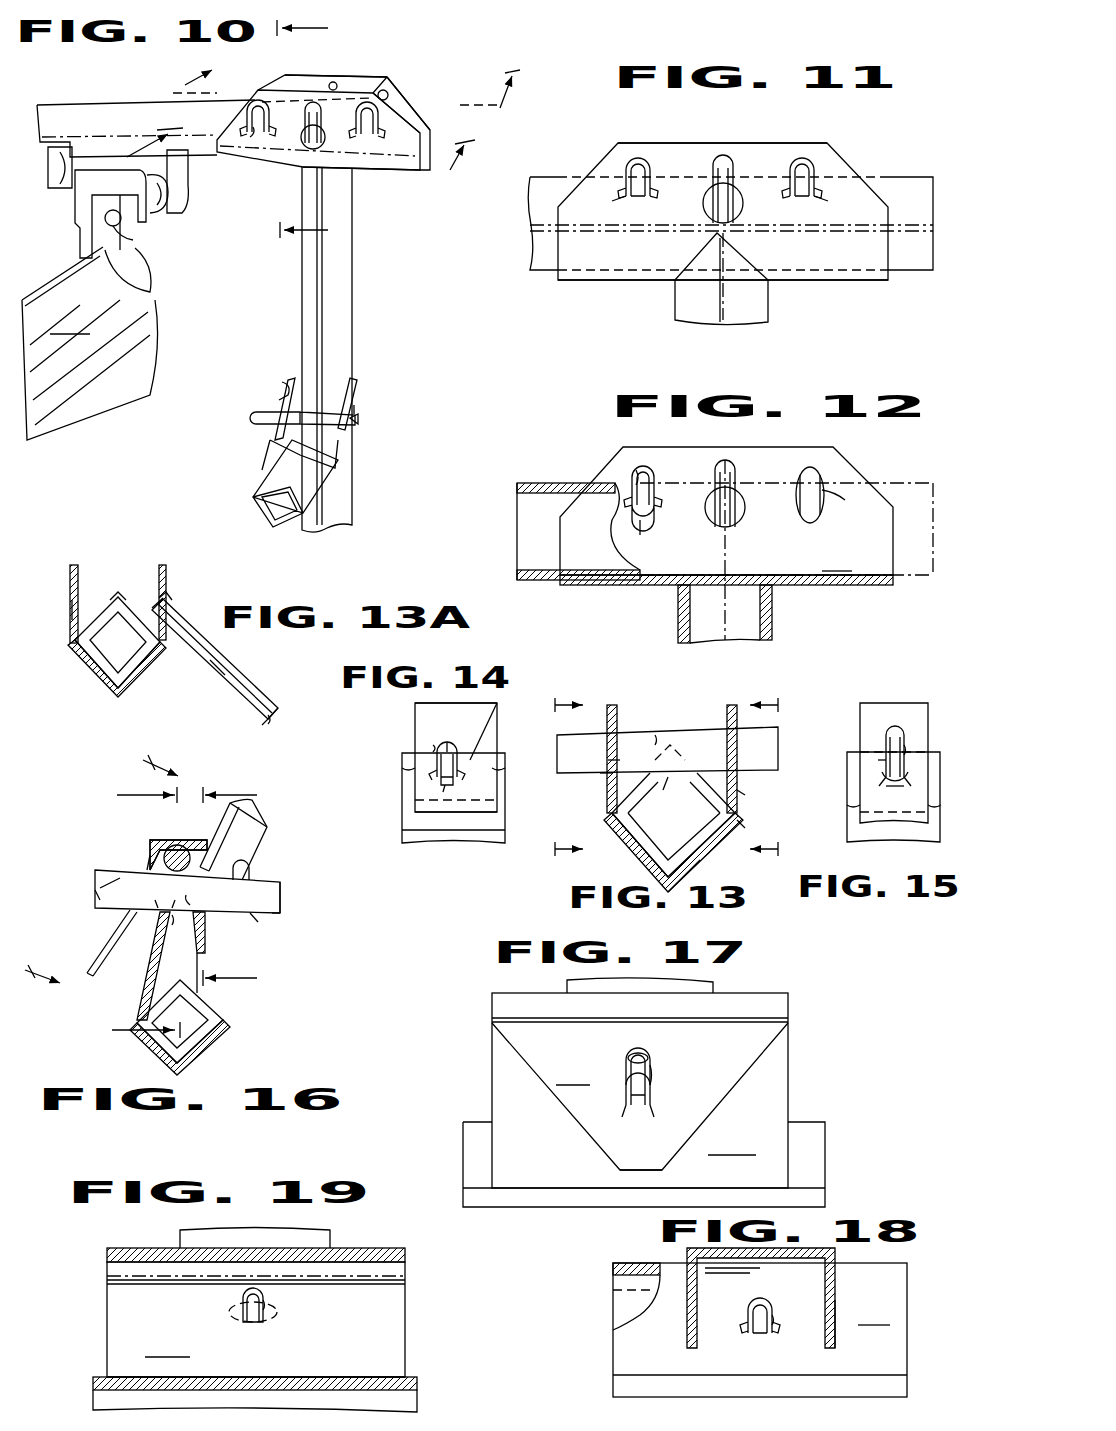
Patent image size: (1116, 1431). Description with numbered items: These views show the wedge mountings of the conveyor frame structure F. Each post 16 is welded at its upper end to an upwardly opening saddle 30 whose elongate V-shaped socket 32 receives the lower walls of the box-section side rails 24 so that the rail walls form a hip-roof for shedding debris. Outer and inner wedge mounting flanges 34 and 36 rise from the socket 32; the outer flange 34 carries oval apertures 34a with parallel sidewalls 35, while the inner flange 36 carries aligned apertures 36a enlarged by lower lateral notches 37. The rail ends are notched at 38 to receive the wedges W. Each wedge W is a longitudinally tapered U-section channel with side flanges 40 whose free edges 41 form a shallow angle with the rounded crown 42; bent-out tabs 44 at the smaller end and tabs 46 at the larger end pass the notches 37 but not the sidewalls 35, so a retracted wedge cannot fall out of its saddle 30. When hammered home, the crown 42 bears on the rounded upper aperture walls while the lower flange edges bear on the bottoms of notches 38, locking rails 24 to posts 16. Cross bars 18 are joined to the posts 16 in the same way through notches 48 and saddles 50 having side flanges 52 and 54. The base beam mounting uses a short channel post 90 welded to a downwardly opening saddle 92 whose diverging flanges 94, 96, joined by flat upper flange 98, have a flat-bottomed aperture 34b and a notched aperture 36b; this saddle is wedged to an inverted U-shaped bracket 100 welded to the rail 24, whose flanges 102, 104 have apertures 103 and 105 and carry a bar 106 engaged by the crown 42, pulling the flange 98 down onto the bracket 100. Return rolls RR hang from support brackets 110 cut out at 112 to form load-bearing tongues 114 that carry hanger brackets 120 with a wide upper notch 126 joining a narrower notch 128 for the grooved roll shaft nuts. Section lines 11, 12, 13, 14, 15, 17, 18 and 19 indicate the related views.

In FIG. 10, the section line 11- 11 is at (305, 148).
In FIG. 10, the section line 12- 12 is at (352, 84).
In FIG. 10, the section line 13- 13 is at (318, 138).
In FIG. 13, the section line 14- 14 is at (569, 774).
In FIG. 13, the section line 15- 15 is at (762, 777).
In FIG. 10, the post 16 is at (352, 472).
In FIG. 11, the post 16 is at (770, 316).
In FIG. 12, the post 16 is at (775, 605).
In FIG. 16, the section line 17- 17 is at (101, 874).
In FIG. 10, the cross bar 18 is at (253, 490).
In FIG. 16, the cross bar 18 is at (247, 885).
In FIG. 16, the section line 19- 19 is at (142, 913).
In FIG. 10, the side rail 24 is at (67, 105).
In FIG. 11, the side rail 24 is at (897, 177).
In FIG. 12, the side rail 24 is at (885, 482).
In FIG. 13A, the side rail 24 is at (100, 668).
In FIG. 14, the side rail 24 is at (405, 805).
In FIG. 13, the side rail 24 is at (690, 806).
In FIG. 15, the side rail 24 is at (860, 843).
In FIG. 16, the side rail 24 is at (215, 1048).
In FIG. 17, the side rail 24 is at (825, 1150).
In FIG. 19, the side rail 24 is at (417, 1395).
In FIG. 10, the saddle 30 is at (390, 66).
In FIG. 11, the saddle 30 is at (697, 136).
In FIG. 12, the saddle 30 is at (658, 581).
In FIG. 13A, the saddle 30 is at (172, 562).
In FIG. 14, the saddle 30 is at (455, 822).
In FIG. 13, the saddle 30 is at (604, 822).
In FIG. 15, the saddle 30 is at (893, 826).
In FIG. 10, the V-shaped socket 32 is at (420, 172).
In FIG. 11, the V-shaped socket 32 is at (610, 268).
In FIG. 13A, the V-shaped socket 32 is at (135, 680).
In FIG. 14, the V-shaped socket 32 is at (415, 828).
In FIG. 13, the V-shaped socket 32 is at (698, 862).
In FIG. 10, the outer wedge mounting flange 34 is at (397, 95).
In FIG. 12, the outer wedge mounting flange 34 is at (726, 511).
In FIG. 13A, the outer wedge mounting flange 34 is at (160, 565).
In FIG. 14, the outer wedge mounting flange 34 is at (456, 757).
In FIG. 13, the outer wedge mounting flange 34 is at (730, 705).
In FIG. 15, the outer wedge mounting flange 34 is at (858, 712).
In FIG. 10, the wedge-receiving aperture 34a is at (378, 90).
In FIG. 12, the wedge-receiving aperture 34a is at (648, 527).
In FIG. 13A, the wedge-receiving aperture 34a is at (168, 590).
In FIG. 13, the wedge-receiving aperture 34a is at (745, 830).
In FIG. 15, the wedge-receiving aperture 34a is at (880, 760).
In FIG. 16, the wedge-receiving aperture 34b is at (125, 876).
In FIG. 17, the wedge-receiving aperture 34b is at (630, 1055).
In FIG. 12, the parallel sidewalls 35 is at (805, 500).
In FIG. 10, the inner wedge mounting flange 36 is at (405, 112).
In FIG. 11, the inner wedge mounting flange 36 is at (740, 143).
In FIG. 13A, the inner wedge mounting flange 36 is at (70, 570).
In FIG. 14, the inner wedge mounting flange 36 is at (412, 710).
In FIG. 13, the inner wedge mounting flange 36 is at (613, 705).
In FIG. 10, the wedge-receiving aperture 36a is at (367, 135).
In FIG. 11, the wedge-receiving aperture 36a is at (630, 172).
In FIG. 13A, the wedge-receiving aperture 36a is at (70, 612).
In FIG. 14, the wedge-receiving aperture 36a is at (497, 706).
In FIG. 13, the wedge-receiving aperture 36a is at (594, 753).
In FIG. 16, the notched wedge-receiving aperture 36b is at (252, 872).
In FIG. 18, the notched wedge-receiving aperture 36b is at (745, 1305).
In FIG. 10, the lateral notch 37 is at (300, 135).
In FIG. 11, the lateral notch 37 is at (662, 190).
In FIG. 12, the lateral notch 37 is at (725, 493).
In FIG. 14, the lateral notch 37 is at (430, 775).
In FIG. 11, the notch 38 is at (634, 200).
In FIG. 12, the notch 38 is at (838, 504).
In FIG. 13A, the notch 38 is at (120, 597).
In FIG. 13, the notch 38 is at (692, 752).
In FIG. 12, the side flange 40 is at (622, 488).
In FIG. 13A, the side flange 40 is at (228, 665).
In FIG. 14, the side flange 40 is at (430, 755).
In FIG. 13, the side flange 40 is at (635, 740).
In FIG. 15, the side flange 40 is at (880, 745).
In FIG. 16, the side flange 40 is at (282, 900).
In FIG. 13A, the free edge 41 is at (215, 690).
In FIG. 13, the free edge 41 is at (663, 799).
In FIG. 16, the free edge 41 is at (255, 915).
In FIG. 12, the crown 42 is at (650, 478).
In FIG. 13A, the crown 42 is at (258, 692).
In FIG. 14, the crown 42 is at (447, 740).
In FIG. 15, the crown 42 is at (893, 725).
In FIG. 16, the crown 42 is at (282, 884).
In FIG. 13A, the retainer tab 44 is at (168, 600).
In FIG. 14, the retainer tab 44 is at (443, 793).
In FIG. 13, the retainer tab 44 is at (605, 778).
In FIG. 16, the retainer tab 44 is at (282, 912).
In FIG. 13A, the retainer tab 46 is at (258, 725).
In FIG. 13, the retainer tab 46 is at (742, 790).
In FIG. 15, the retainer tab 46 is at (890, 793).
In FIG. 16, the retainer tab 46 is at (95, 901).
In FIG. 17, the retainer tab 46 is at (637, 1112).
In FIG. 10, the notch 48 is at (253, 420).
In FIG. 10, the saddle 50 is at (268, 460).
In FIG. 10, the saddle side flange 52 is at (357, 397).
In FIG. 10, the saddle side flange 54 is at (290, 380).
In FIG. 16, the channel-shaped post 90 is at (210, 838).
In FIG. 17, the channel-shaped post 90 is at (712, 985).
In FIG. 19, the channel-shaped post 90 is at (330, 1235).
In FIG. 18, the channel-shaped post 90 is at (688, 1315).
In FIG. 16, the saddle 92 is at (103, 920).
In FIG. 17, the saddle 92 is at (778, 1030).
In FIG. 19, the saddle 92 is at (130, 1245).
In FIG. 18, the saddle 92 is at (648, 1258).
In FIG. 16, the outer flange 94 is at (105, 948).
In FIG. 17, the outer flange 94 is at (640, 1096).
In FIG. 16, the inner flange 96 is at (206, 938).
In FIG. 18, the inner flange 96 is at (862, 1322).
In FIG. 16, the upper flange 98 is at (162, 846).
In FIG. 19, the upper flange 98 is at (405, 1252).
In FIG. 18, the upper flange 98 is at (613, 1265).
In FIG. 16, the bracket 100 is at (135, 996).
In FIG. 17, the bracket 100 is at (490, 1065).
In FIG. 19, the bracket 100 is at (408, 1290).
In FIG. 18, the bracket 100 is at (610, 1390).
In FIG. 16, the outer flange 102 is at (138, 1005).
In FIG. 17, the outer flange 102 is at (688, 1148).
In FIG. 16, the wedge aperture 103 is at (140, 892).
In FIG. 16, the inner flange 104 is at (205, 965).
In FIG. 19, the inner flange 104 is at (256, 1352).
In FIG. 18, the inner flange 104 is at (907, 1383).
In FIG. 16, the wedge aperture 105 is at (215, 893).
In FIG. 19, the wedge aperture 105 is at (240, 1302).
In FIG. 16, the bar 106 is at (150, 852).
In FIG. 19, the bar 106 is at (107, 1275).
In FIG. 18, the bar 106 is at (615, 1290).
In FIG. 10, the return roll support bracket 110 is at (190, 195).
In FIG. 10, the cut out 112 is at (52, 190).
In FIG. 10, the load bearing tongue 114 is at (160, 205).
In FIG. 10, the hanger bracket 120 is at (78, 240).
In FIG. 10, the upper notch 126 is at (122, 230).
In FIG. 10, the narrower notch 128 is at (140, 268).
In FIG. 10, the wedge W is at (253, 127).
In FIG. 12, the wedge W is at (636, 470).
In FIG. 13A, the wedge W is at (272, 713).
In FIG. 14, the wedge W is at (430, 742).
In FIG. 13, the wedge W is at (658, 735).
In FIG. 15, the wedge W is at (905, 735).
In FIG. 16, the wedge W is at (170, 930).
In FIG. 17, the wedge W is at (655, 1062).
In FIG. 19, the wedge W is at (268, 1300).
In FIG. 18, the wedge W is at (778, 1315).
In FIG. 10, the frame structure F is at (356, 281).
In FIG. 11, the frame structure F is at (670, 317).
In FIG. 13, the frame structure F is at (648, 860).
In FIG. 16, the frame structure F is at (205, 1057).
In FIG. 17, the frame structure F is at (828, 1119).
In FIG. 10, the return roll RR is at (90, 343).